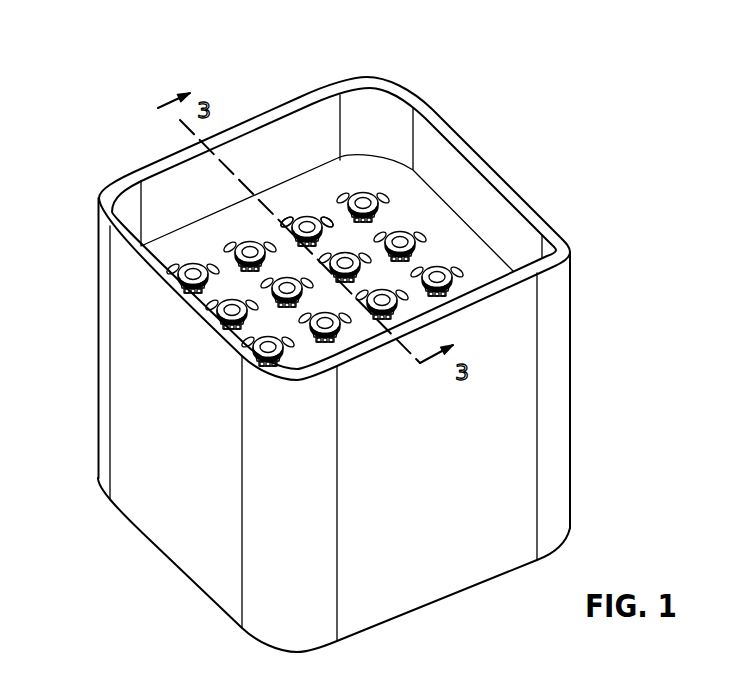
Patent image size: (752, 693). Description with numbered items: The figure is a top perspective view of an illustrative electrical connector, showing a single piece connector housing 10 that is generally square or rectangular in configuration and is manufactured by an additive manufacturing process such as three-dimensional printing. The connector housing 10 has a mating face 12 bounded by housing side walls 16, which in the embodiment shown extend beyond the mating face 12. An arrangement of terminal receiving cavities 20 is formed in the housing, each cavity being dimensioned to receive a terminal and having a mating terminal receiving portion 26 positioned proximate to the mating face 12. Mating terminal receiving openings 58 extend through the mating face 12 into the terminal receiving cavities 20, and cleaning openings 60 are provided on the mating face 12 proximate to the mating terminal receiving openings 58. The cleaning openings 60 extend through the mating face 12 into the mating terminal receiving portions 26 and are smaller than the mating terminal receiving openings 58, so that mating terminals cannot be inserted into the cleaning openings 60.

The connector housing 10 is at (610, 84).
The mating face 12 is at (467, 247).
The housing side walls 16 is at (507, 430).
The terminal receiving cavities 20 is at (367, 200).
The mating terminal receiving portion 26 is at (185, 266).
The mating terminal receiving openings 58 is at (303, 216).
The cleaning openings 60 is at (288, 216).